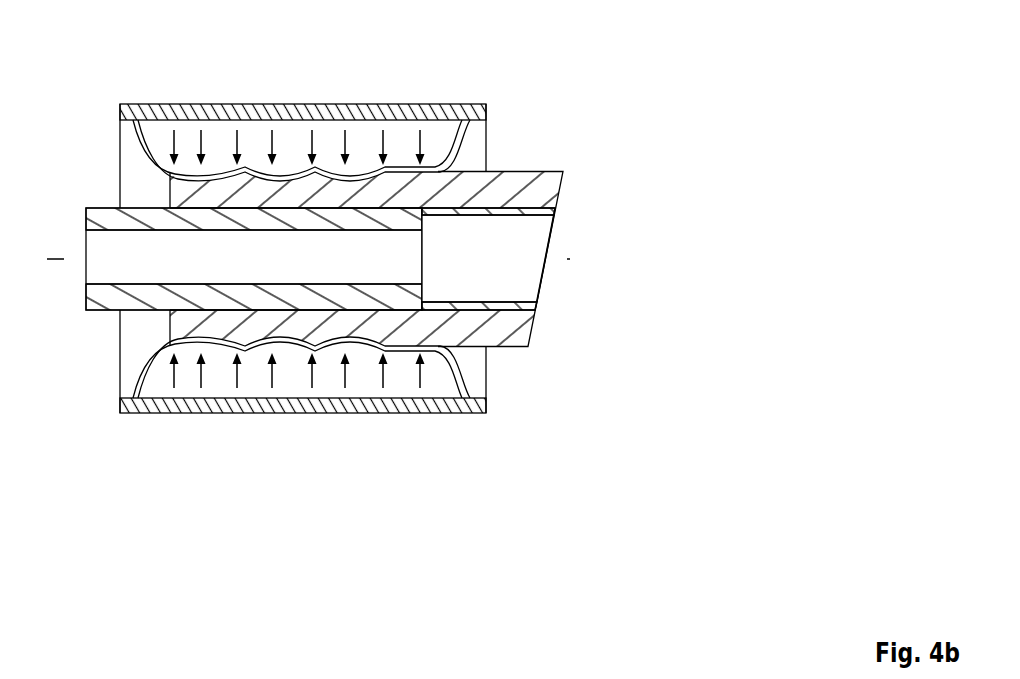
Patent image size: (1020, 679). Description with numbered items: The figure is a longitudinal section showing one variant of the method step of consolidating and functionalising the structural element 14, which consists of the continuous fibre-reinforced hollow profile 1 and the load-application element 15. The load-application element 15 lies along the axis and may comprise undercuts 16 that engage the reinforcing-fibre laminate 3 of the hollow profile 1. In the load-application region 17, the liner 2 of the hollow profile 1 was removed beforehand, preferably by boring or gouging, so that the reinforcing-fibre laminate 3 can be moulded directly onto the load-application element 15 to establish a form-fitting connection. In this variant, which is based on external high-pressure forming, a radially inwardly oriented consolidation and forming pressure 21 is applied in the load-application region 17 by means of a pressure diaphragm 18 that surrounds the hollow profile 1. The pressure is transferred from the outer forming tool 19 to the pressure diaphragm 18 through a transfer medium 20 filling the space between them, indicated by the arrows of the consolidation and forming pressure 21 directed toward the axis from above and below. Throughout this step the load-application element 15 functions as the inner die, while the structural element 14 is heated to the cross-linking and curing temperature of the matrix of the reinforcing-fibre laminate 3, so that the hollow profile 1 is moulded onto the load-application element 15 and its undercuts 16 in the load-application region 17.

The hollow profile 1 is at (532, 165).
The liner 2 is at (515, 305).
The reinforcing-fibre laminate 3 is at (512, 327).
The structural element 14 is at (86, 182).
The load-application element 15 is at (94, 322).
The undercuts 16 is at (212, 208).
The load-application region 17 is at (290, 208).
The pressure diaphragm 18 is at (365, 168).
The forming tool 19 is at (474, 113).
The transfer medium 20 is at (401, 137).
The consolidation and forming pressure 21 is at (237, 377).